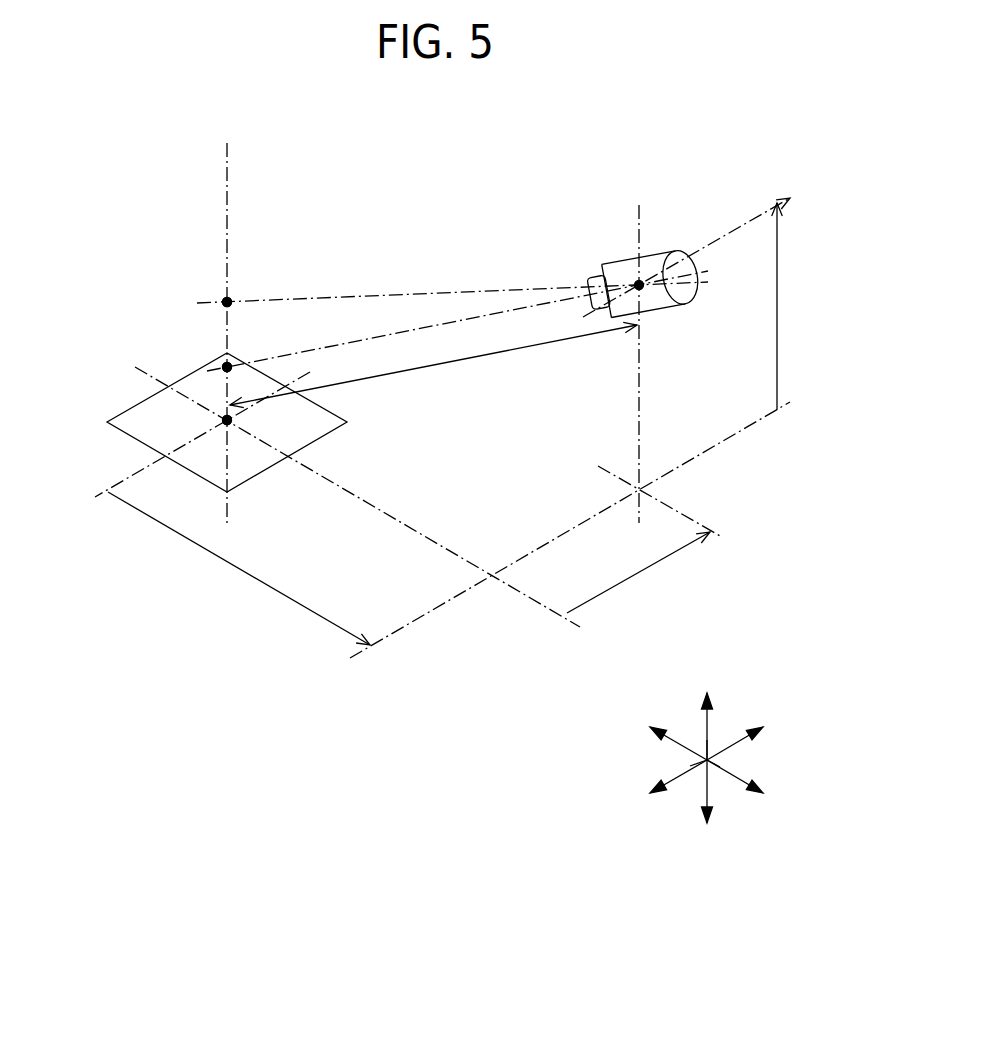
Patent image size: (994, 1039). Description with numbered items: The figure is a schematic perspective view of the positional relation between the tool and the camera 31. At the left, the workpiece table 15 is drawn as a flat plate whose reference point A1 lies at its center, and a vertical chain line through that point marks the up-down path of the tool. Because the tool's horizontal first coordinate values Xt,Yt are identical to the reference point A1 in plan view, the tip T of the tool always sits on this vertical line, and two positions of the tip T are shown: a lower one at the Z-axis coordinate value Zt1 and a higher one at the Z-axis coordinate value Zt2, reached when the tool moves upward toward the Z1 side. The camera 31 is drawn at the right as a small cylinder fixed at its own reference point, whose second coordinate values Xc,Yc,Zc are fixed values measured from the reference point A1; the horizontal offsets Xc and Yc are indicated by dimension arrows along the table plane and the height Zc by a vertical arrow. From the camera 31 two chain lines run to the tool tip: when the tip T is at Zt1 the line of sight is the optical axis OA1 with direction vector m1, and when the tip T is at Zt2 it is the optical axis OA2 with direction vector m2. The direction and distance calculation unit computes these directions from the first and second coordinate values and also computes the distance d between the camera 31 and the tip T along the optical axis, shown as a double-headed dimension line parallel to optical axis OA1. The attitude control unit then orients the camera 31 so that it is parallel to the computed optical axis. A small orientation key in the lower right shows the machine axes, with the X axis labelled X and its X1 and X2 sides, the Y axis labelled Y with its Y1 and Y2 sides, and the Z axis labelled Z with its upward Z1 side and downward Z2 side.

The workpiece table 15 is at (122, 430).
The camera 31 is at (650, 258).
The tip of the tool T is at (232, 300).
The reference point of the workpiece table A1 is at (230, 425).
The Z-axis coordinate value Zt1 is at (210, 361).
The Z-axis coordinate value Zt2 is at (210, 293).
The optical axis OA1 is at (347, 340).
The optical axis OA2 is at (475, 290).
The distance d is at (433, 364).
The X-axis and Y-axis coordinate values of the tool Xt,Yt is at (257, 415).
The second coordinate values of the camera Xc,Yc,Zc is at (656, 303).
The X-axis coordinate value of the camera Xc is at (239, 586).
The Y-axis coordinate value of the camera Yc is at (665, 572).
The Z-axis coordinate value of the camera Zc is at (704, 293).
The X-axis direction X is at (720, 767).
The Y-axis direction Y is at (690, 765).
The Z-axis direction Z is at (714, 742).
The X1 side X1 is at (752, 783).
The X2 side X2 is at (659, 734).
The Y1 side Y1 is at (660, 786).
The Y2 side Y2 is at (751, 734).
The Z1 side Z1 is at (713, 712).
The Z2 side Z2 is at (713, 809).